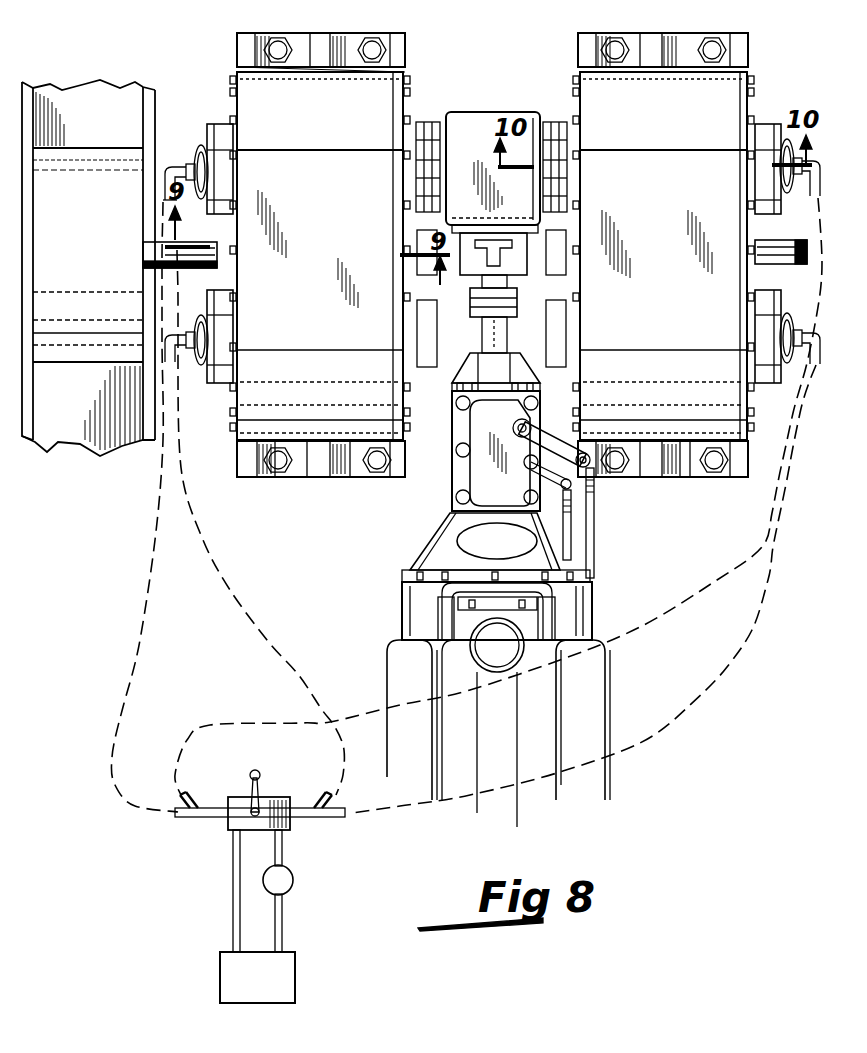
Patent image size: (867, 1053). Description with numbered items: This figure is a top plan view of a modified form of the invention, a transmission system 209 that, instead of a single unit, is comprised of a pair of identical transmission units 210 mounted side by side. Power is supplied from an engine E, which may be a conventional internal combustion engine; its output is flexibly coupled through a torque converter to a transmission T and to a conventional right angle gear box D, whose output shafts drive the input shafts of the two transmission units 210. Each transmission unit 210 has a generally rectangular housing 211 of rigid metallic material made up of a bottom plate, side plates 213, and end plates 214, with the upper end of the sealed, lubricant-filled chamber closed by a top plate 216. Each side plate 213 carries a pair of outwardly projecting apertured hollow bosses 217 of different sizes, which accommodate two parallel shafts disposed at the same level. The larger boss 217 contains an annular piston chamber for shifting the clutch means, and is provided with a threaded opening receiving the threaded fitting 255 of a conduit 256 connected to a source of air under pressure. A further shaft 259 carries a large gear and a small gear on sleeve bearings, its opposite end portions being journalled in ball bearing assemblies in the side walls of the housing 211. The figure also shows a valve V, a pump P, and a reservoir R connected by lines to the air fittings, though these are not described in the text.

The transmission system 209 is at (472, 415).
The transmission unit 210 is at (449, 270).
The housing 211 is at (459, 479).
The side plate 213 is at (234, 84).
The end plate 214 is at (402, 66).
The top plate 216 is at (342, 208).
The boss 217 is at (210, 127).
The threaded fitting 255 is at (210, 324).
The conduit 256 is at (165, 176).
The shaft 259 is at (145, 270).
The right angle gear box D is at (490, 112).
The transmission T is at (454, 494).
The engine E is at (385, 655).
The valve V is at (282, 797).
The pump P is at (278, 880).
The reservoir R is at (257, 977).